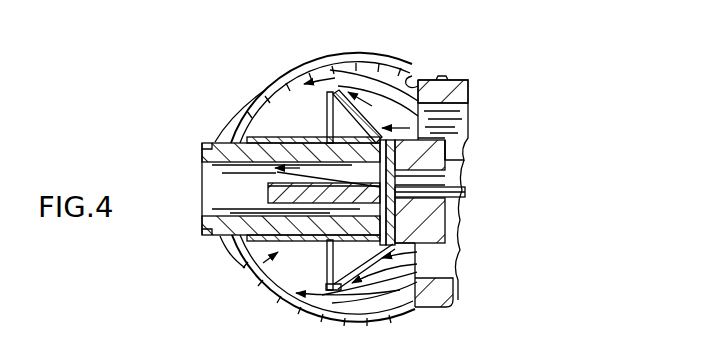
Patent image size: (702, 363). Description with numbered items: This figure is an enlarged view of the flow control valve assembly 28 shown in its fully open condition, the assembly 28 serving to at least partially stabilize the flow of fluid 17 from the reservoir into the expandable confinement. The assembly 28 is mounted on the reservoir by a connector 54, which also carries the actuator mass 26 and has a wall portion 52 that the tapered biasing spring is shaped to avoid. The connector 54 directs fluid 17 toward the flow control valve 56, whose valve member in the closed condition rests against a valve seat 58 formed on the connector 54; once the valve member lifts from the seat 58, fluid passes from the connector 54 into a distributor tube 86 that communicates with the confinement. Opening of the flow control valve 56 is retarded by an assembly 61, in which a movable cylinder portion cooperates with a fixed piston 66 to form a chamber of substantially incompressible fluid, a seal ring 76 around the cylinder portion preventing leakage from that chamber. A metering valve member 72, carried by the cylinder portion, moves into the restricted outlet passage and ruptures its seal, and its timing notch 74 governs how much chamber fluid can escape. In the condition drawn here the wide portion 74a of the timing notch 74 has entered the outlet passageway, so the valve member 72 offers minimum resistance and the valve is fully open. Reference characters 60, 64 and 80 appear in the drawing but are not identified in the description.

The fluid 17 is at (458, 262).
The actuator mass 26 is at (466, 194).
The flow control valve assembly 28 is at (262, 276).
The wall portion 52 is at (466, 113).
The connector 54 is at (468, 92).
The flow control valve 56 is at (370, 51).
The valve seat 58 is at (442, 78).
The nozzle nut 60 is at (390, 231).
The assembly 61 is at (277, 110).
The shoulder 64 is at (445, 140).
The fixed piston 66 is at (210, 222).
The valve member 72 is at (270, 192).
The timing notch 74 is at (306, 168).
The wide portion 74a is at (398, 184).
The seal ring 76 is at (362, 130).
The lower vane 80 is at (334, 280).
The distributor tube 86 is at (414, 78).